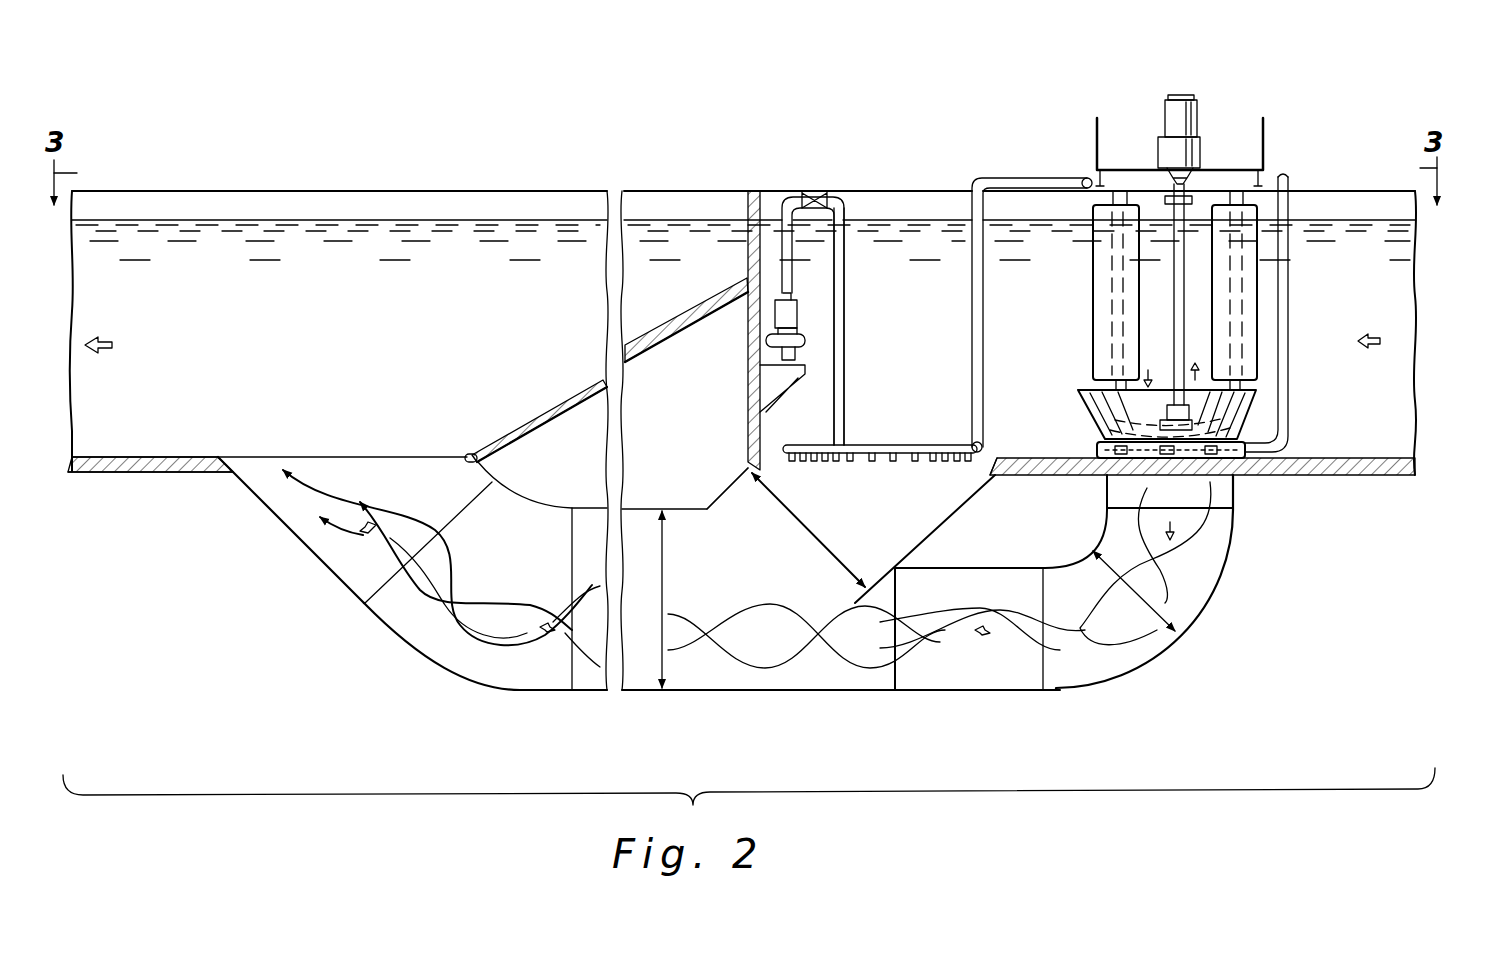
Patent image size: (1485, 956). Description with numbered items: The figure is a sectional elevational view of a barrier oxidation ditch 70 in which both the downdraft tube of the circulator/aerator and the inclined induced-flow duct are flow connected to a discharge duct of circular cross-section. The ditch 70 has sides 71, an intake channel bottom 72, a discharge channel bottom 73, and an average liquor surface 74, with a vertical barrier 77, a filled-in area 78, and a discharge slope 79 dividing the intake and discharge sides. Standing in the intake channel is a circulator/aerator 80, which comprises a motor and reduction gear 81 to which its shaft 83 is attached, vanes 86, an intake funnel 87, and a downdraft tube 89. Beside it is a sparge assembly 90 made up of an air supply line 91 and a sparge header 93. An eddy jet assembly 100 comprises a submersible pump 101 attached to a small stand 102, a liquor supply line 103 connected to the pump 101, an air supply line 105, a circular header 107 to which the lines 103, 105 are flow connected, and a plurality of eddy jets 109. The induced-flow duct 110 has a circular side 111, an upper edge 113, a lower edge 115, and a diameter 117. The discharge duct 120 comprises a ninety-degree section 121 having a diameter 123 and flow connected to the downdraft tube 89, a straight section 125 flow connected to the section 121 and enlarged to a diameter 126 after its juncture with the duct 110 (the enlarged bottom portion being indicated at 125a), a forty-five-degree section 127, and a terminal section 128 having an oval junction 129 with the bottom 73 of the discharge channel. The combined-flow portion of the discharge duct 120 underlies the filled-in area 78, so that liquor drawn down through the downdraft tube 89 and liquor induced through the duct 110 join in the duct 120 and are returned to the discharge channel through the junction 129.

The barrier oxidation ditch 70 is at (899, 160).
The sides 71 is at (1378, 210).
The intake channel bottom 72 is at (1016, 460).
The discharge channel bottom 73 is at (183, 457).
The average liquor surface 74 is at (1343, 217).
The vertical barrier 77 is at (748, 262).
The filled-in area 78 is at (708, 390).
The discharge slope 79 is at (537, 425).
The circulator/aerator 80 is at (1127, 100).
The motor and reduction gear 81 is at (1200, 100).
The shaft 83 is at (1175, 245).
The vanes 86 is at (1105, 305).
The intake funnel 87 is at (1085, 408).
The downdraft tube 89 is at (1233, 497).
The sparge assembly 90 is at (1300, 160).
The air supply line 91 is at (1288, 283).
The sparge header 93 is at (1100, 448).
The eddy jet assembly 100 is at (878, 284).
The submersible pump 101 is at (805, 338).
The small stand 102 is at (787, 395).
The liquor supply line 103 is at (845, 372).
The air supply line 105 is at (972, 340).
The circular header 107 is at (898, 446).
The eddy jets 109 is at (934, 462).
The induced-flow duct 110 is at (820, 550).
The circular side 111 is at (726, 490).
The upper edge 113 is at (1000, 456).
The lower edge 115 is at (898, 570).
The diameter 117 is at (800, 525).
The discharge duct 120 is at (1147, 667).
The 90° section 121 is at (1228, 557).
The diameter 123 is at (1093, 551).
The straight section 125 is at (1005, 692).
The bottom wall portion 125a is at (643, 508).
The diameter 126 is at (664, 580).
The 45° section 127 is at (415, 653).
The terminal section 128 is at (293, 538).
The oval junction 129 is at (467, 455).